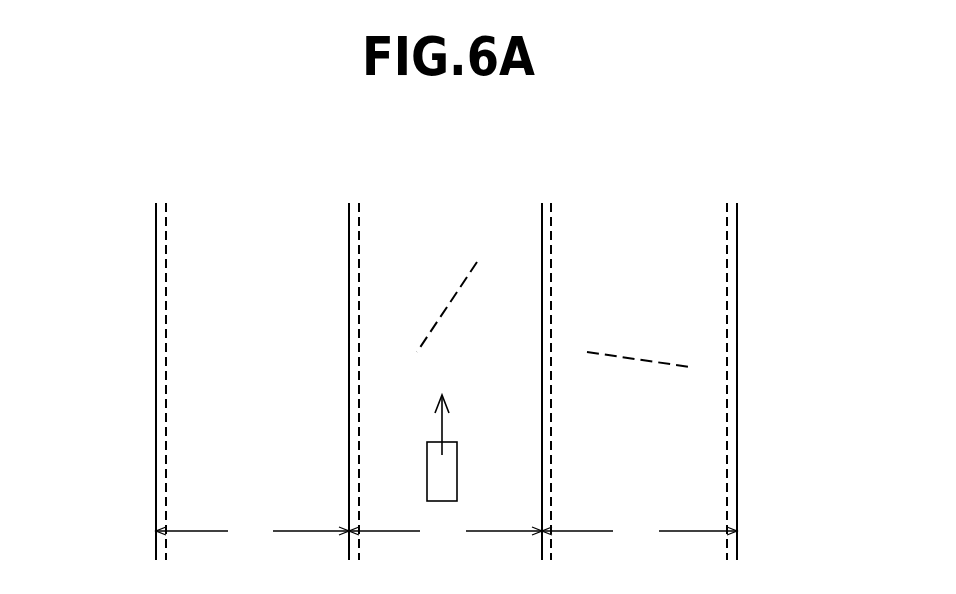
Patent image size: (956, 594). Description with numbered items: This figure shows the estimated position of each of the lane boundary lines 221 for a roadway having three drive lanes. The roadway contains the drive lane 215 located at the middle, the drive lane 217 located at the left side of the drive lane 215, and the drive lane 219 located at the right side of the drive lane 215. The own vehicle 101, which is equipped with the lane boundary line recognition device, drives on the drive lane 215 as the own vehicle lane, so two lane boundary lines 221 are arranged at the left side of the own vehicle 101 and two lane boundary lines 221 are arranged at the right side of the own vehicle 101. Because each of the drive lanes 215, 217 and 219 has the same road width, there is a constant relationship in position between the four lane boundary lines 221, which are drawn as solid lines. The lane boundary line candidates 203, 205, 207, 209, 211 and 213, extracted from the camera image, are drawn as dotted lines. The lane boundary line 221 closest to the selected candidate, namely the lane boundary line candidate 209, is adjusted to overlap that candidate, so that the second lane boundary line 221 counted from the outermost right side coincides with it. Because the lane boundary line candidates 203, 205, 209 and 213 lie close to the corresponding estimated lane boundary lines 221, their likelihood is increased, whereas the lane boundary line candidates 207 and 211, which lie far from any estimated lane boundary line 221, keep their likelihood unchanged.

The own vehicle 101 is at (450, 472).
The lane boundary line candidate 203 is at (166, 333).
The lane boundary line candidate 205 is at (360, 387).
The lane boundary line candidate 207 is at (453, 300).
The lane boundary line candidate 209 is at (552, 395).
The lane boundary line candidate 211 is at (625, 355).
The lane boundary line candidate 213 is at (726, 450).
The drive lane 215 is at (430, 218).
The drive lane 217 is at (255, 218).
The drive lane 219 is at (640, 218).
The lane boundary line 221 is at (156, 262).